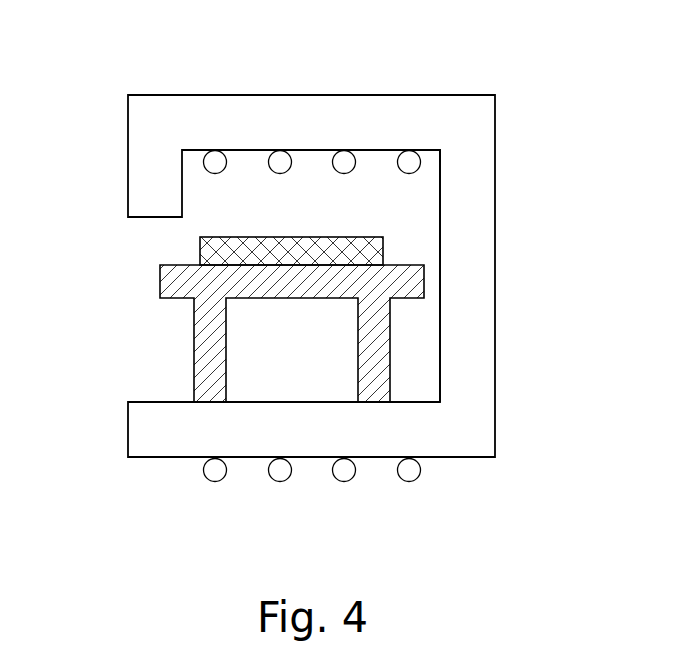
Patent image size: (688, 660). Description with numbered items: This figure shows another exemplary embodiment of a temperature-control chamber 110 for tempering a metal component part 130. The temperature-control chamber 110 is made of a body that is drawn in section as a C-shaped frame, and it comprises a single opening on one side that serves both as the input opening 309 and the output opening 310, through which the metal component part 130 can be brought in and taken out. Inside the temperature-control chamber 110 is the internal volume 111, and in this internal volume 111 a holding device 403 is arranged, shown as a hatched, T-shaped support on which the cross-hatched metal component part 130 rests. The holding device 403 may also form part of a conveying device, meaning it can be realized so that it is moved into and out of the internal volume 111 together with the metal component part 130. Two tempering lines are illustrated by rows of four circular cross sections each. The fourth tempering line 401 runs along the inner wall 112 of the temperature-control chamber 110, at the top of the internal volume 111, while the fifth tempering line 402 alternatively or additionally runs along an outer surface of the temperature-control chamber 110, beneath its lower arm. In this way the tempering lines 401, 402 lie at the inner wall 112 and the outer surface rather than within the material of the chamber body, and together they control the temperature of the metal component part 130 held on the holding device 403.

The temperature-control chamber 110 is at (538, 121).
The internal volume 111 is at (393, 214).
The inner wall 112 is at (437, 149).
The metal component part 130 is at (378, 258).
The input opening 309 is at (313, 298).
The output opening 310 is at (129, 281).
The fourth tempering line 401 is at (409, 152).
The fifth tempering line 402 is at (409, 482).
The holding device 403 is at (418, 282).